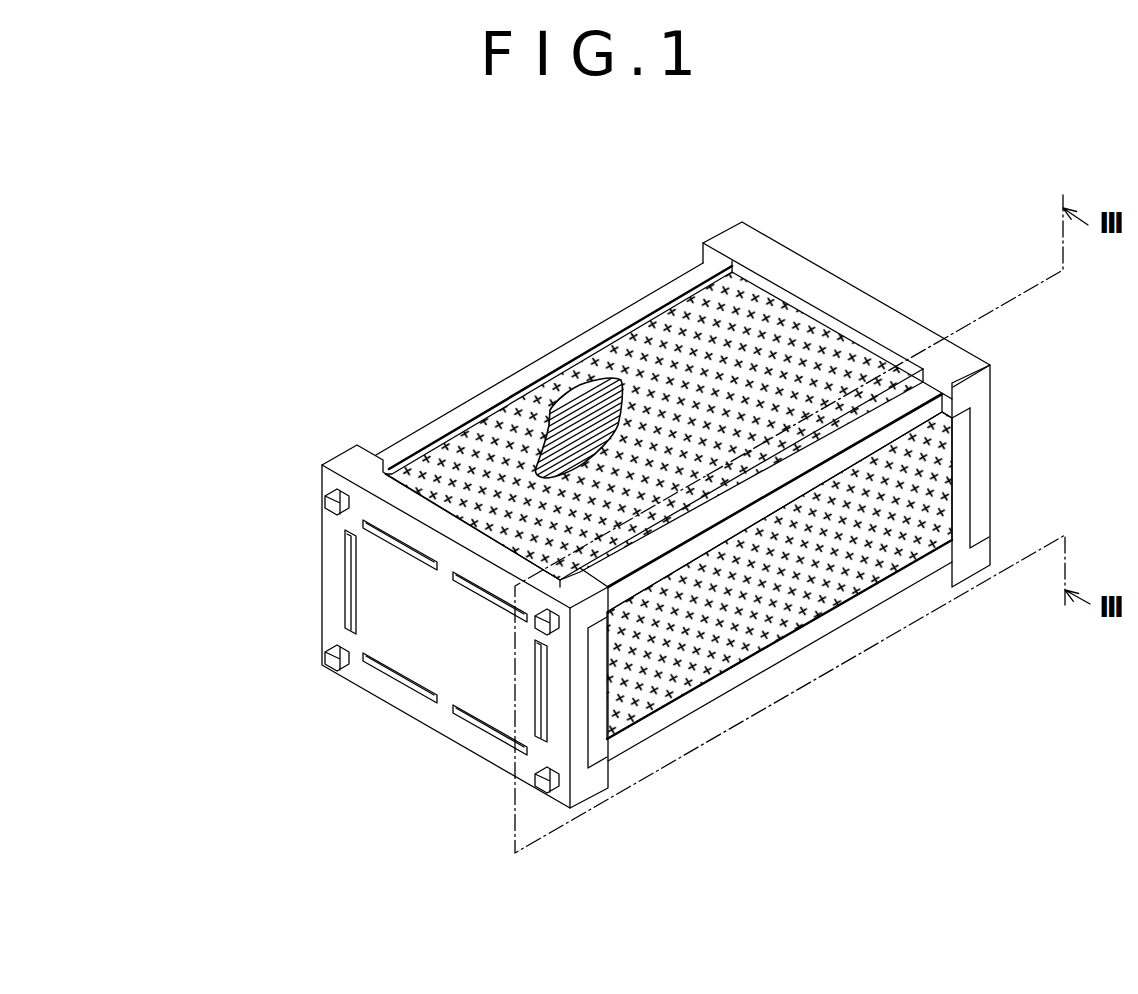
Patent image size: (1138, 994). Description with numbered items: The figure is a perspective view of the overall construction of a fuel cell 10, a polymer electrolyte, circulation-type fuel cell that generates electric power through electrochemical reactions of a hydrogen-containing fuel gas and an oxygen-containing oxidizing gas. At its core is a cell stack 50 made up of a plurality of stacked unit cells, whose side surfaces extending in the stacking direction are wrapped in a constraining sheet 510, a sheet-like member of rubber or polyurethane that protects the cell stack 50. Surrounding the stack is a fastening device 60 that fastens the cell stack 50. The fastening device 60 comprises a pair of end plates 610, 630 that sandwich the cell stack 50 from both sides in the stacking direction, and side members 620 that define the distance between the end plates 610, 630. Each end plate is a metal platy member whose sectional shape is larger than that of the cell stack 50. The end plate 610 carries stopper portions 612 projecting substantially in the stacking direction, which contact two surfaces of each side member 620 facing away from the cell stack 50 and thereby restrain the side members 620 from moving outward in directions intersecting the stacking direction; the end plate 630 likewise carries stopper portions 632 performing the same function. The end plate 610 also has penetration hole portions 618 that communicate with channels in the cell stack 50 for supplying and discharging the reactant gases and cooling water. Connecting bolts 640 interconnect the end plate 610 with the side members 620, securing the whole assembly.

The fuel cell 10 is at (923, 192).
The cell stack 50 is at (570, 425).
The constraining sheet 510 is at (500, 457).
The fastening device 60 is at (667, 888).
The end plate 610 is at (613, 819).
The stopper portions 612 is at (365, 458).
The penetration hole portions 618 is at (352, 583).
The side members 620 is at (720, 533).
The end plate 630 is at (996, 596).
The stopper portions 632 is at (733, 252).
The connecting bolts 640 is at (323, 503).